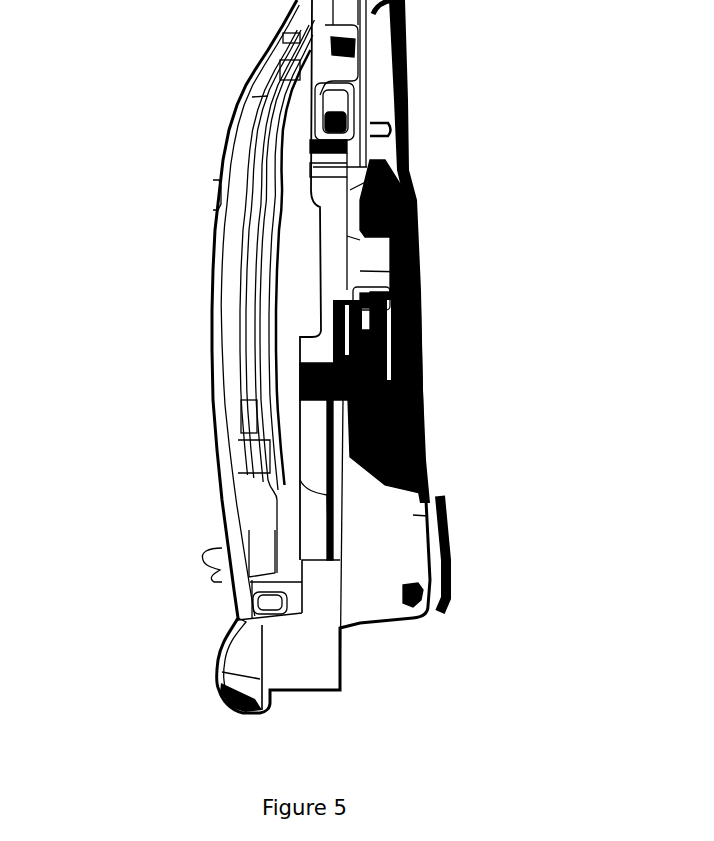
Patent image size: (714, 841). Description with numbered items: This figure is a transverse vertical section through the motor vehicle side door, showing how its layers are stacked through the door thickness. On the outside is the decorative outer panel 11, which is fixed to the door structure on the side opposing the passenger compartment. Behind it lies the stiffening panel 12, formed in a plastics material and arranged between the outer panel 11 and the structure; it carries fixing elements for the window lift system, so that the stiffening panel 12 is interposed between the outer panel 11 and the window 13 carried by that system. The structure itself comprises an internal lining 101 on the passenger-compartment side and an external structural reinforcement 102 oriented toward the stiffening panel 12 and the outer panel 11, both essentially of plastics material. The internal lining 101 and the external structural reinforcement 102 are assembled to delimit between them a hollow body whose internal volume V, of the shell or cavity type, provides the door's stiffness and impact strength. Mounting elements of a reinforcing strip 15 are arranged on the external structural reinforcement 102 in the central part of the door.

The decorative outer panel 11 is at (227, 483).
The stiffening panel 12 is at (242, 170).
The window 13 is at (272, 235).
The external structural reinforcement 102 is at (317, 277).
The reinforcing strip 15 is at (350, 100).
The internal volume V is at (407, 163).
The internal lining 101 is at (383, 297).